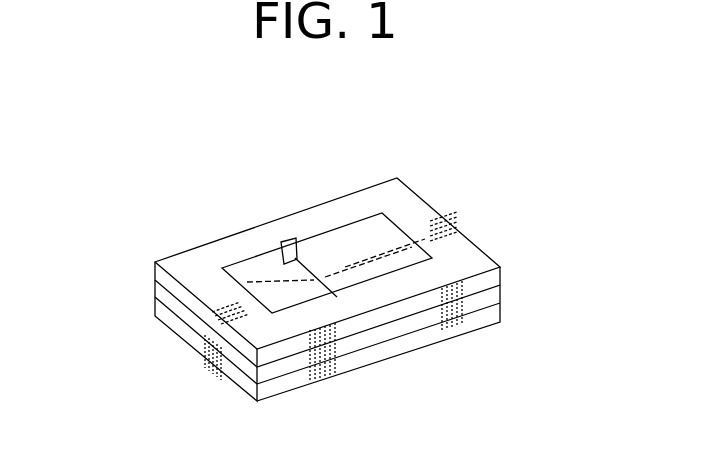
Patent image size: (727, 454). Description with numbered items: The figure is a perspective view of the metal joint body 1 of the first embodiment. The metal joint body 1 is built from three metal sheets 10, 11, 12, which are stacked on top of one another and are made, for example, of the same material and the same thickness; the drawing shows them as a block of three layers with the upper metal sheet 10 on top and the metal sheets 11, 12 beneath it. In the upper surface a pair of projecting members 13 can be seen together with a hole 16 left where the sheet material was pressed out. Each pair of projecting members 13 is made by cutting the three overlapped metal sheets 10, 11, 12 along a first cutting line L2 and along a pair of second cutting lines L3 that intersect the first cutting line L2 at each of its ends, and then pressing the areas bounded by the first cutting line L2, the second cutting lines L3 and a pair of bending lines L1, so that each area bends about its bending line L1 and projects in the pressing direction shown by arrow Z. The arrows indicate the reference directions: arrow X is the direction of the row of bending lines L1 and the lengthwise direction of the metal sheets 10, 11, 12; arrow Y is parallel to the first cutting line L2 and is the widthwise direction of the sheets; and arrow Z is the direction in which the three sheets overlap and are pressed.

The metal joint body 1 is at (347, 277).
The metal sheet 10 is at (322, 245).
The metal sheet 11 is at (207, 350).
The metal sheet 12 is at (377, 355).
The projecting member 13 is at (265, 284).
The hole 16 is at (313, 245).
The bending line L1 is at (407, 230).
The first cutting line L2 is at (319, 248).
The second cutting line L3 is at (285, 265).
The arrow X is at (445, 405).
The arrow Y is at (125, 387).
The arrow Z is at (537, 268).